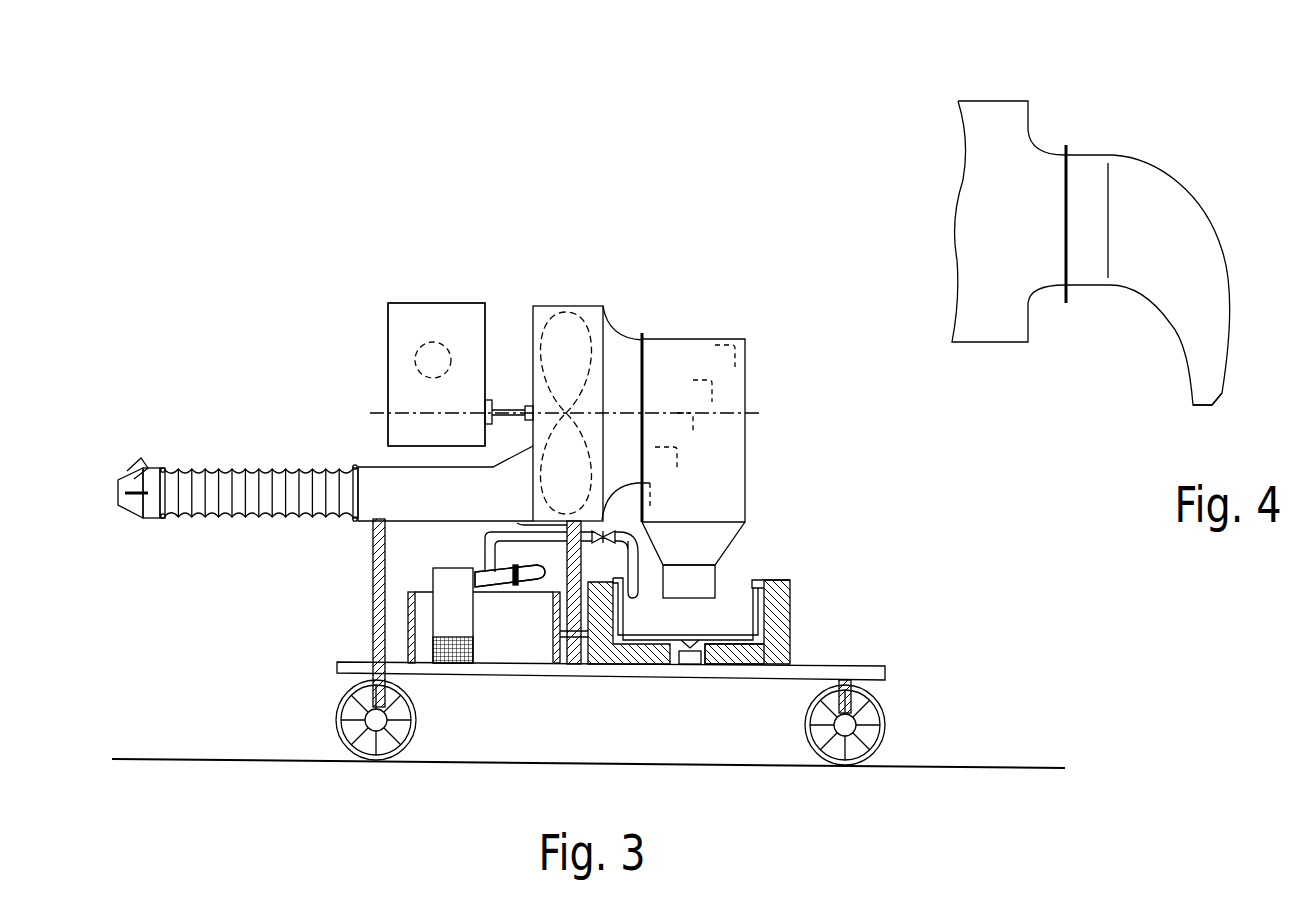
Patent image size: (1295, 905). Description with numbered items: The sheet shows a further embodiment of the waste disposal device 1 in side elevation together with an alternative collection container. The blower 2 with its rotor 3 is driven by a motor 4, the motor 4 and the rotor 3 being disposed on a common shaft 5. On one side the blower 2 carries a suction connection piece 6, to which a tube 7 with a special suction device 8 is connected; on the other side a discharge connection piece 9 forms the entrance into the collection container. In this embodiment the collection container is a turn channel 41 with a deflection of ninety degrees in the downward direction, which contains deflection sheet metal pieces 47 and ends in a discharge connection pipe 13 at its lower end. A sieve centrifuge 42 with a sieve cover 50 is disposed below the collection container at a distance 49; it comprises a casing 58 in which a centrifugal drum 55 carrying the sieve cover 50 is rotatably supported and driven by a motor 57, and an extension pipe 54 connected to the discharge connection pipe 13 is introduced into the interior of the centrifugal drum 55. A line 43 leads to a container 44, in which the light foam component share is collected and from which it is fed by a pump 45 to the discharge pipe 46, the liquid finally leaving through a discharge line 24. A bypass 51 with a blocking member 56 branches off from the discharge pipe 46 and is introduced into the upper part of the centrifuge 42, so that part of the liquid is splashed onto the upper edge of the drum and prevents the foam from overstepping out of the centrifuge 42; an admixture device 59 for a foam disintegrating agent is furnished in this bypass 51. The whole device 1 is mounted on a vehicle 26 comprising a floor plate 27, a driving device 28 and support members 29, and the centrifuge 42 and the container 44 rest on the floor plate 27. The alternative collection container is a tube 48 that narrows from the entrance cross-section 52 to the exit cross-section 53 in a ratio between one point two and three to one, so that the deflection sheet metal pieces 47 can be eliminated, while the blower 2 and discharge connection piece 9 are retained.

In FIG. 3, the device 1 is at (703, 242).
In FIG. 3, the blower 2 is at (542, 306).
In FIG. 4, the blower 2 is at (980, 112).
In FIG. 3, the rotor 3 is at (585, 312).
In FIG. 3, the motor 4 is at (395, 338).
In FIG. 3, the shaft 5 is at (372, 410).
In FIG. 3, the suction connection piece 6 is at (377, 510).
In FIG. 3, the tube 7 is at (270, 480).
In FIG. 3, the special suction device 8 is at (133, 508).
In FIG. 3, the discharge connection piece 9 is at (622, 345).
In FIG. 4, the discharge connection piece 9 is at (1050, 163).
In FIG. 3, the discharge connection pipe 13 is at (718, 542).
In FIG. 3, the discharge line 24 is at (545, 569).
In FIG. 3, the vehicle 26 is at (278, 728).
In FIG. 3, the floor plate 27 is at (870, 677).
In FIG. 3, the driving device 28 is at (368, 762).
In FIG. 3, the support members 29 is at (373, 583).
In FIG. 3, the turn channel 41 is at (735, 452).
In FIG. 3, the sieve centrifuge 42 is at (888, 587).
In FIG. 3, the line 43 is at (585, 664).
In FIG. 3, the container 44 is at (528, 653).
In FIG. 3, the pump 45 is at (447, 632).
In FIG. 3, the discharge pipe 46 is at (502, 580).
In FIG. 3, the deflection sheet metal pieces 47 is at (718, 392).
In FIG. 4, the tube 48 is at (1203, 233).
In FIG. 3, the distance 49 is at (717, 564).
In FIG. 3, the sieve cover 50 is at (630, 625).
In FIG. 3, the bypass 51 is at (487, 546).
In FIG. 4, the entrance cross-section 52 is at (1063, 213).
In FIG. 4, the exit cross-section 53 is at (1223, 390).
In FIG. 3, the extension pipe 54 is at (673, 580).
In FIG. 3, the centrifugal drum 55 is at (765, 615).
In FIG. 3, the blocking member 56 is at (600, 533).
In FIG. 3, the motor 57 is at (692, 660).
In FIG. 3, the casing 58 is at (788, 643).
In FIG. 3, the admixture device 59 is at (483, 551).